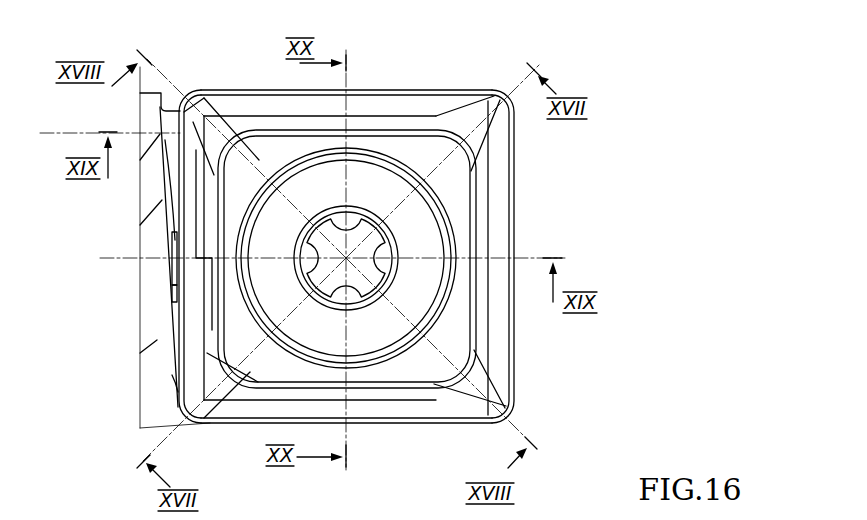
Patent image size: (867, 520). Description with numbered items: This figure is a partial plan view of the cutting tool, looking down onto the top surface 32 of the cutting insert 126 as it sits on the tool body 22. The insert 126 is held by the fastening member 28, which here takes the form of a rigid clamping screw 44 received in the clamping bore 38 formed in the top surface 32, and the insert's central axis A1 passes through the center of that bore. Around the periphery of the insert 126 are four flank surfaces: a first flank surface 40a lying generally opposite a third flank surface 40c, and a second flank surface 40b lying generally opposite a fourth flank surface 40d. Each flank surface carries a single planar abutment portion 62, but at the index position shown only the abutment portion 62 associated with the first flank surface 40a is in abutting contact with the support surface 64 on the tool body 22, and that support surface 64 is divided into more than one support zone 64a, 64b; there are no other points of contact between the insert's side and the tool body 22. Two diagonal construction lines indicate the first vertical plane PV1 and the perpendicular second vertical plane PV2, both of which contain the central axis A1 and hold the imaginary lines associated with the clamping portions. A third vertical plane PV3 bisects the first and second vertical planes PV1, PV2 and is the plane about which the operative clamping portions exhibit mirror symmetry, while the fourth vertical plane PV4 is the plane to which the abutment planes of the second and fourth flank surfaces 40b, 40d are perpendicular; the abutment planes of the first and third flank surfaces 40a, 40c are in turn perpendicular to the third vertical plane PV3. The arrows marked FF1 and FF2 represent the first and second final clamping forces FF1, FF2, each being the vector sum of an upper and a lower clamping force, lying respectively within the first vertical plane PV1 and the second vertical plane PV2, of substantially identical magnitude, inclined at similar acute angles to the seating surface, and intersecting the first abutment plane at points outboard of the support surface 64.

The tool body 22 is at (152, 124).
The fastening member 28 is at (398, 222).
The top surface 32 is at (378, 128).
The clamping bore 38 is at (443, 242).
The rigid clamping screw 44 is at (413, 280).
The single planar abutment portion 62 is at (172, 165).
The support surface 64 is at (188, 301).
The support zone 64a is at (204, 98).
The support zone 64b is at (178, 404).
The cutting insert 126 is at (297, 117).
The first flank surface 40a is at (180, 272).
The second flank surface 40b is at (467, 92).
The third flank surface 40c is at (512, 365).
The fourth flank surface 40d is at (370, 426).
The first final clamping force FF1 is at (218, 383).
The second final clamping force FF2 is at (216, 126).
The first vertical plane PV1 is at (548, 57).
The second vertical plane PV2 is at (130, 36).
The third vertical plane PV3 is at (75, 262).
The fourth vertical plane PV4 is at (372, 62).
The central axis A1 is at (320, 258).